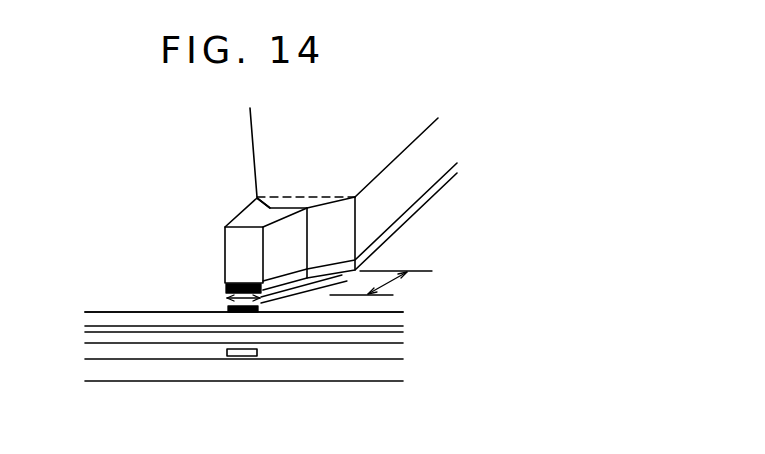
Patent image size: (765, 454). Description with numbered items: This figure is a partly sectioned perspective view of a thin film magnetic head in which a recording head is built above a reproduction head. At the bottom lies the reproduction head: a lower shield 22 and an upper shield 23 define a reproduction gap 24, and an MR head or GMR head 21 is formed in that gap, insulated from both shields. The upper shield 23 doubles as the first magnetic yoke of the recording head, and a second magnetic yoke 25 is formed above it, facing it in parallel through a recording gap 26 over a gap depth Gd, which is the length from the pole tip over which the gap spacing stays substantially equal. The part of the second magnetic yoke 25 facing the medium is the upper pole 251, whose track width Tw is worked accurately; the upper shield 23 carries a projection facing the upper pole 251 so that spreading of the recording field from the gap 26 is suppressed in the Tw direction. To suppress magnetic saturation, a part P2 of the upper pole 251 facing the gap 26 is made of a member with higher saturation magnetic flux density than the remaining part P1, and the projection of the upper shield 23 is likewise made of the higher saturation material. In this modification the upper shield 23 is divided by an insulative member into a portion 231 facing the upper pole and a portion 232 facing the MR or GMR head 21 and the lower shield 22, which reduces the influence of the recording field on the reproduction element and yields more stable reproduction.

The second magnetic yoke 25 is at (275, 133).
The upper pole 251 is at (250, 218).
The recording gap 26 is at (225, 310).
The upper shield 23 is at (76, 307).
The portion facing the upper pole 231 is at (118, 312).
The portion facing the GMR or MR 232 is at (200, 338).
The reproduction gap 24 is at (203, 353).
The lower shield 22 is at (137, 372).
The MR head or GMR head 21 is at (252, 357).
The remaining part P1 is at (225, 227).
The part facing the gap P2 is at (223, 293).
The track width Tw is at (258, 281).
The gap depth Gd is at (390, 284).